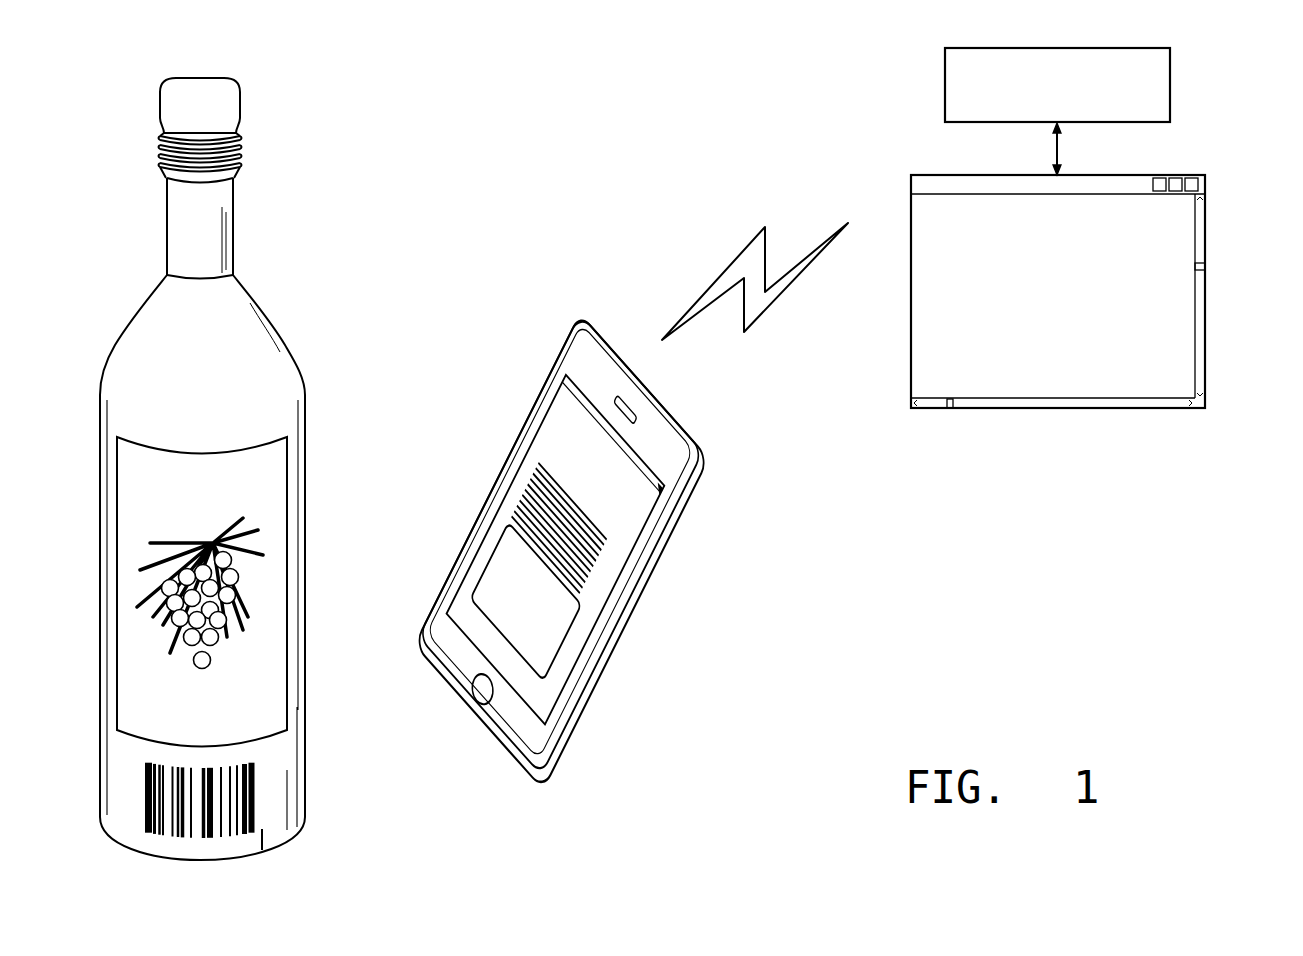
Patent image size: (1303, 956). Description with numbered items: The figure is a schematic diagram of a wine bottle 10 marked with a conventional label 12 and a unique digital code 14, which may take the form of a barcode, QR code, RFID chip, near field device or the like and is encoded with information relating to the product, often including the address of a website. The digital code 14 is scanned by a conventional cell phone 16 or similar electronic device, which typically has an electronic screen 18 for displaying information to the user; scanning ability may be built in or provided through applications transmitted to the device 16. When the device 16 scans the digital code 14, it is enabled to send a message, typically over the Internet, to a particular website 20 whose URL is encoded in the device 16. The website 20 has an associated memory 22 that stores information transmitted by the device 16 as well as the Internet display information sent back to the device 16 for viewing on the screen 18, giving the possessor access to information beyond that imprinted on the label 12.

The wine bottle 10 is at (285, 332).
The label 12 is at (157, 495).
The digital code 14 is at (145, 803).
The cell phone 16 is at (610, 663).
The electronic screen 18 is at (638, 557).
The website 20 is at (1205, 268).
The memory 22 is at (1170, 78).